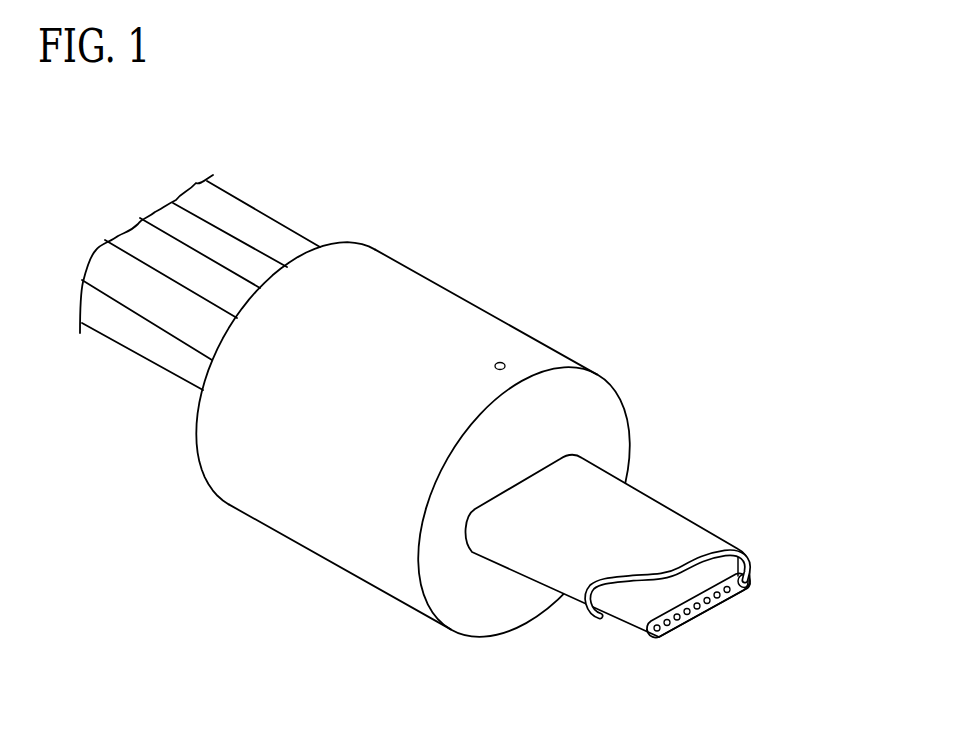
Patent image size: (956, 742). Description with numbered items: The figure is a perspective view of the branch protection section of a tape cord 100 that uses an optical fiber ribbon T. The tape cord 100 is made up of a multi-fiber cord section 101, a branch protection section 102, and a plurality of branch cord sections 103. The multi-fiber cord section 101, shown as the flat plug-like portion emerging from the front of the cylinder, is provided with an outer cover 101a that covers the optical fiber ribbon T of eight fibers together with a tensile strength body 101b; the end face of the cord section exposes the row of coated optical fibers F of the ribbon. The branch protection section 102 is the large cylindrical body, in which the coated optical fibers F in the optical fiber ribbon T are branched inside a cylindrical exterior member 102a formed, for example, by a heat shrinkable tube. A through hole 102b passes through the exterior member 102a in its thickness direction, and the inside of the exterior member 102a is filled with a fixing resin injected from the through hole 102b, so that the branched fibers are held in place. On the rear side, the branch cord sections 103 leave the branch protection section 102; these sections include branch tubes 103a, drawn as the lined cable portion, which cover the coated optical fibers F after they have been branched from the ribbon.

The tape cord 100 is at (706, 213).
The multi-fiber cord section 101 is at (691, 491).
The outer cover 101a is at (713, 545).
The tensile strength body 101b is at (751, 582).
The branch protection section 102 is at (512, 284).
The exterior member 102a is at (427, 298).
The through hole 102b is at (504, 364).
The branch cord sections 103 is at (311, 199).
The branch tubes 103a is at (233, 212).
The optical fiber ribbon T is at (652, 637).
The coated optical fibers F is at (710, 603).